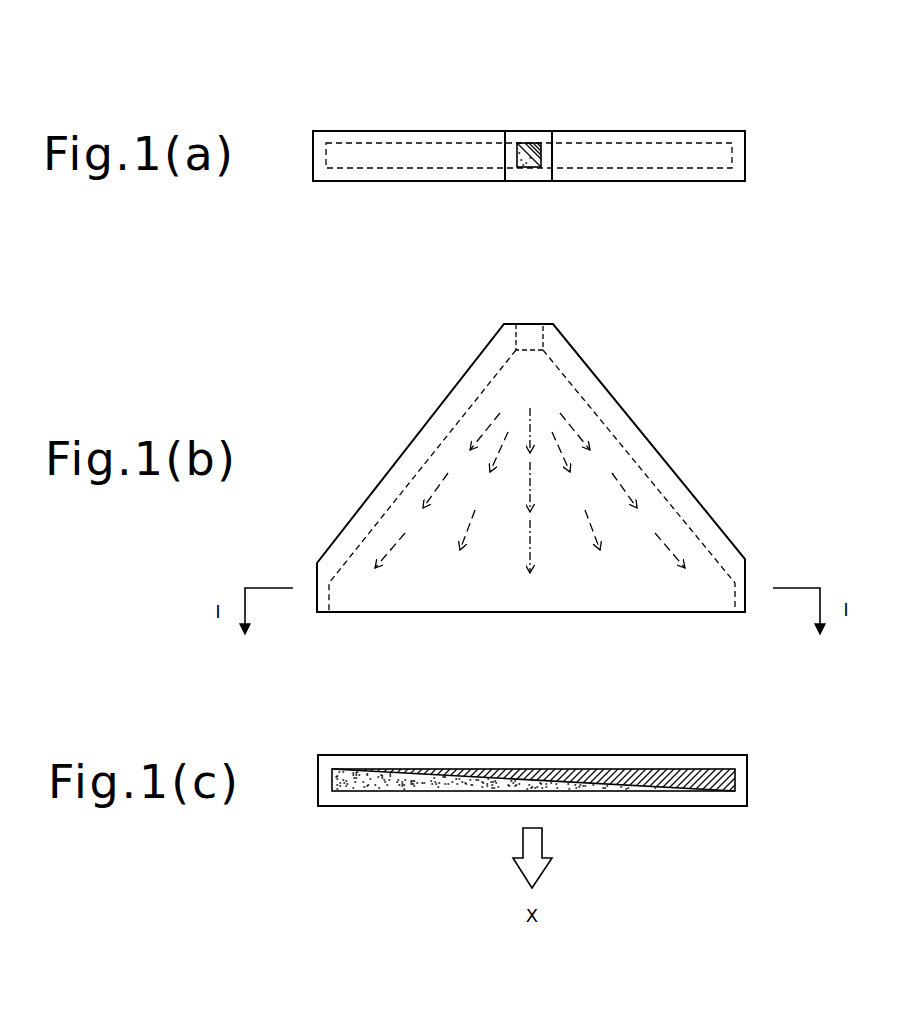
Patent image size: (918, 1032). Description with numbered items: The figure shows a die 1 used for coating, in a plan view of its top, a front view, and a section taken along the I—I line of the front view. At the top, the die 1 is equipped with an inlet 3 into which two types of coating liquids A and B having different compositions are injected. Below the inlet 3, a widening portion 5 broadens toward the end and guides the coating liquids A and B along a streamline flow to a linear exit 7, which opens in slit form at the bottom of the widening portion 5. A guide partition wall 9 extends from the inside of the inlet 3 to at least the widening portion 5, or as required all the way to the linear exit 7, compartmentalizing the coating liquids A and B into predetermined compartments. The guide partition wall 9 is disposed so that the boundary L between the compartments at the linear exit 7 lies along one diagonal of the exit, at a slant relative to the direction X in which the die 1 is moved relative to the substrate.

In FIG. 1A, the die 1 is at (537, 33).
In FIG. 1A, the inlet 3 is at (529, 143).
In FIG. 1B, the inlet 3 is at (529, 324).
In FIG. 1A, the guide partition wall 9 is at (536, 143).
In FIG. 1B, the guide partition wall 9 is at (536, 324).
In FIG. 1B, the widening portion 5 is at (654, 441).
In FIG. 1B, the linear exit 7 is at (531, 613).
In FIG. 1A, the coating liquid A is at (541, 152).
In FIG. 1C, the coating liquid A is at (648, 775).
In FIG. 1A, the coating liquid B is at (517, 152).
In FIG. 1C, the coating liquid B is at (425, 777).
In FIG. 1C, the boundary L is at (535, 776).